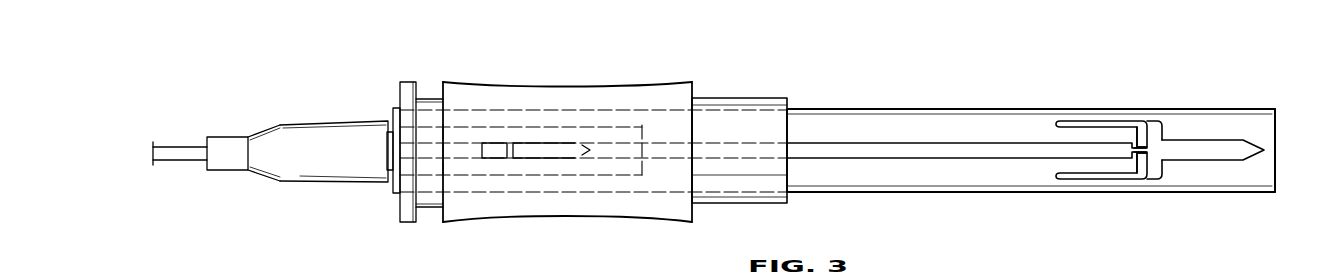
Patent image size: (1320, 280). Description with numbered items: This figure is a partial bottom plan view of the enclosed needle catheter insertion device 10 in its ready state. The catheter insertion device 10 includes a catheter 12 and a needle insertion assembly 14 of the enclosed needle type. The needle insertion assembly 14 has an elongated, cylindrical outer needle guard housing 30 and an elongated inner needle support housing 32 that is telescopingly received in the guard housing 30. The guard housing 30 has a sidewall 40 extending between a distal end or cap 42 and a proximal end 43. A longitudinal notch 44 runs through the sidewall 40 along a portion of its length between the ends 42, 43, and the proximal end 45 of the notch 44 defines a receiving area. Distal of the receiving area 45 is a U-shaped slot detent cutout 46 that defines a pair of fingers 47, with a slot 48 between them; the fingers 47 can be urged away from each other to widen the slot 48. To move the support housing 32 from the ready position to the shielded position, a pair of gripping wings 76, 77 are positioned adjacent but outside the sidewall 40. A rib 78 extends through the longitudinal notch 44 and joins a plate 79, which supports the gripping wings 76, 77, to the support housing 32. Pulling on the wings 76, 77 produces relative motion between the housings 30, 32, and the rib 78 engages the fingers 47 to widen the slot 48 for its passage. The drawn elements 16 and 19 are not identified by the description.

The catheter insertion device 10 is at (282, 50).
The catheter 12 is at (328, 120).
The needle insertion assembly 14 is at (788, 81).
The tapered nose portion 16 is at (294, 123).
The needle 19 is at (181, 145).
The outer needle guard housing 30 is at (972, 108).
The inner needle support housing 32 is at (628, 123).
The sidewall 40 is at (1033, 123).
The distal end or cap 42 is at (393, 113).
The proximal end 43 is at (1283, 108).
The longitudinal notch 44 is at (1000, 148).
The proximal end of notch 45 is at (1210, 150).
The U-shaped slot detent cutout 46 is at (1153, 130).
The fingers 47 is at (1140, 135).
The slot 48 is at (1146, 149).
The gripping wing 76 is at (554, 85).
The gripping wing 77 is at (550, 223).
The rib 78 is at (532, 158).
The plate 79 is at (675, 127).